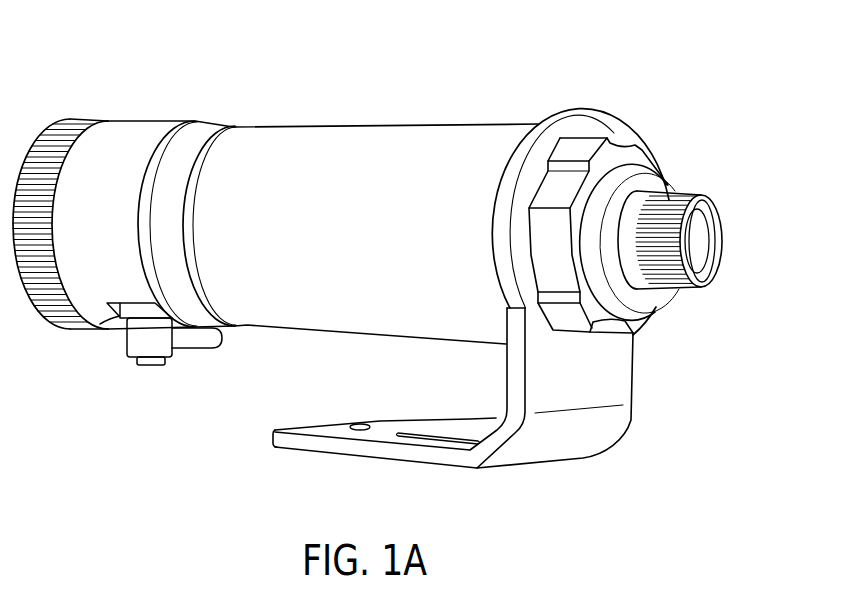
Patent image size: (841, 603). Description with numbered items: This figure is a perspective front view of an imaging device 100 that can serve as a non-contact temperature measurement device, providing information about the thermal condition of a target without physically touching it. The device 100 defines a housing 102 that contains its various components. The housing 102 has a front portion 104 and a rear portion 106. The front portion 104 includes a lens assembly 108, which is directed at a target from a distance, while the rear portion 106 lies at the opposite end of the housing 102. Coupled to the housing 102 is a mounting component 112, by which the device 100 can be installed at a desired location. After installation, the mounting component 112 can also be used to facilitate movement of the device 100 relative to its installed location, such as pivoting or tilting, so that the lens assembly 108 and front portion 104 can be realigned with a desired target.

The imaging device 100 is at (665, 84).
The housing 102 is at (325, 147).
The front portion 104 is at (528, 122).
The rear portion 106 is at (112, 120).
The lens assembly 108 is at (640, 145).
The mounting component 112 is at (595, 425).